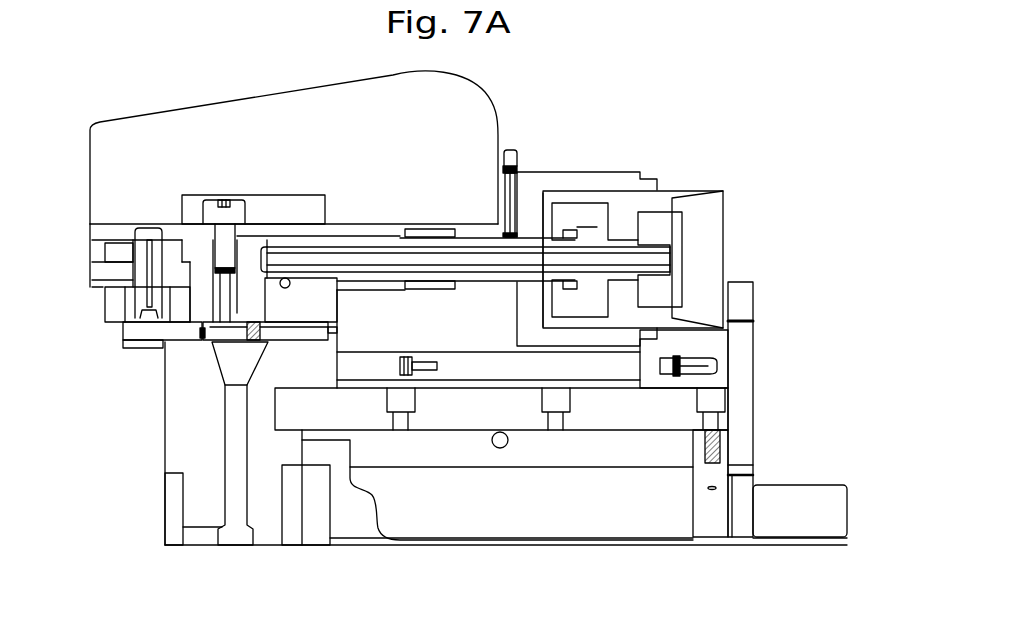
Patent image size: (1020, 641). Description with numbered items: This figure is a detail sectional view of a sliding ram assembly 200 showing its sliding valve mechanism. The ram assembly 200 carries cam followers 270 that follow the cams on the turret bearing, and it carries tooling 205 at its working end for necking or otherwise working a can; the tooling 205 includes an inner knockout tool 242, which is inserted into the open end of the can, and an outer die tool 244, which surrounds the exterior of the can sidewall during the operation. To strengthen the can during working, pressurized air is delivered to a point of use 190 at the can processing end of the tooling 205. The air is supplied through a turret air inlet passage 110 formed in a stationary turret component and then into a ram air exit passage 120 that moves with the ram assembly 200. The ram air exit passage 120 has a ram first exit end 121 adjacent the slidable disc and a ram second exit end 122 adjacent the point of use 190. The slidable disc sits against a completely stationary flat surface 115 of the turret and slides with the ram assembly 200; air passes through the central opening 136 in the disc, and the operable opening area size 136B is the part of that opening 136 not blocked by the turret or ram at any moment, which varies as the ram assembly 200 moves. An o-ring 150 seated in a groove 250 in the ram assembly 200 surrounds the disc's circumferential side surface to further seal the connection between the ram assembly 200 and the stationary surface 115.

The ram assembly 200 is at (107, 109).
The groove 250 is at (204, 328).
The cam followers 270 is at (110, 303).
The flat surface 115 is at (175, 334).
The o-ring 150 is at (200, 346).
The ram first exit end 121 is at (250, 310).
The ram air exit passage 120 is at (310, 252).
The opening 136 is at (264, 322).
The operable opening area size 136B is at (250, 330).
The turret air inlet passage 110 is at (233, 498).
The ram second exit end 122 is at (656, 259).
The outer die tool 244 is at (692, 186).
The tooling 205 is at (731, 184).
The inner knockout tool 242 is at (694, 209).
The point of use 190 is at (684, 259).